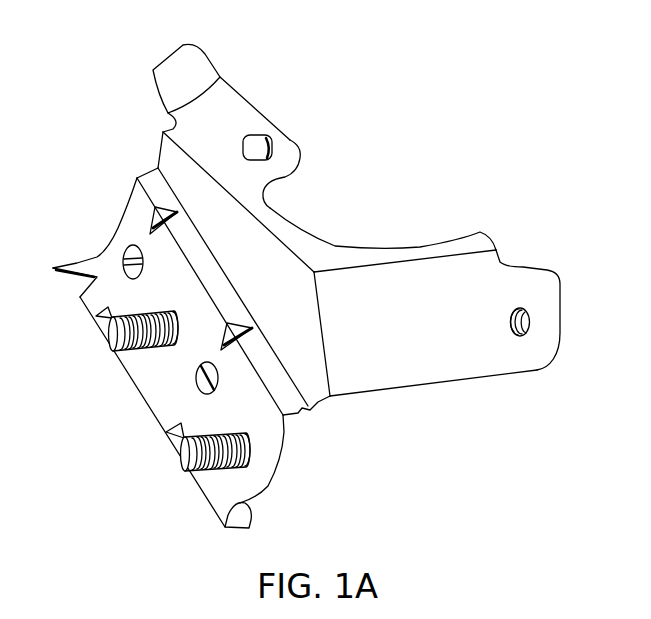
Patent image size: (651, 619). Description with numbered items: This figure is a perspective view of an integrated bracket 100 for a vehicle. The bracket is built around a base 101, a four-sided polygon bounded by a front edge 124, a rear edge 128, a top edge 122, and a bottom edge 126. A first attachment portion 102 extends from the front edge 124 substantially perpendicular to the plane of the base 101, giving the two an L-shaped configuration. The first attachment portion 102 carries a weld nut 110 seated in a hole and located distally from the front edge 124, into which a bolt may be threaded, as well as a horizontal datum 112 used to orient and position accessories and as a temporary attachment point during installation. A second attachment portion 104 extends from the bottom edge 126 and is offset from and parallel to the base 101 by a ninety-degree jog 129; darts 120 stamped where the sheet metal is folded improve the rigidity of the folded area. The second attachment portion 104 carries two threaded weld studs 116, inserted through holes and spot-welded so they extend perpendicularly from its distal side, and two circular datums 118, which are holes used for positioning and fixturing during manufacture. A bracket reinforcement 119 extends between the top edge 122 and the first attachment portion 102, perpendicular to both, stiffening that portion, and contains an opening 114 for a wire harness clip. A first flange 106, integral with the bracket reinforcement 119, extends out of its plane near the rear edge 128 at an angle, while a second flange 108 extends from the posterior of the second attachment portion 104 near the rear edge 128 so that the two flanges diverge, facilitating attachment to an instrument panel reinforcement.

The integrated bracket 100 is at (447, 143).
The base 101 is at (283, 218).
The first attachment portion 102 is at (449, 353).
The second attachment portion 104 is at (147, 371).
The first flange 106 is at (163, 66).
The second flange 108 is at (54, 267).
The weld nut 110 is at (531, 325).
The horizontal datum 112 is at (524, 266).
The opening 114 is at (268, 150).
The threaded weld stud 116 is at (112, 334).
The circular datum 118 is at (123, 265).
The bracket reinforcement 119 is at (238, 98).
The dart 120 is at (150, 212).
The top edge 122 is at (268, 207).
The front edge 124 is at (324, 337).
The bottom edge 126 is at (302, 409).
The rear edge 128 is at (157, 153).
The jog 129 is at (136, 177).